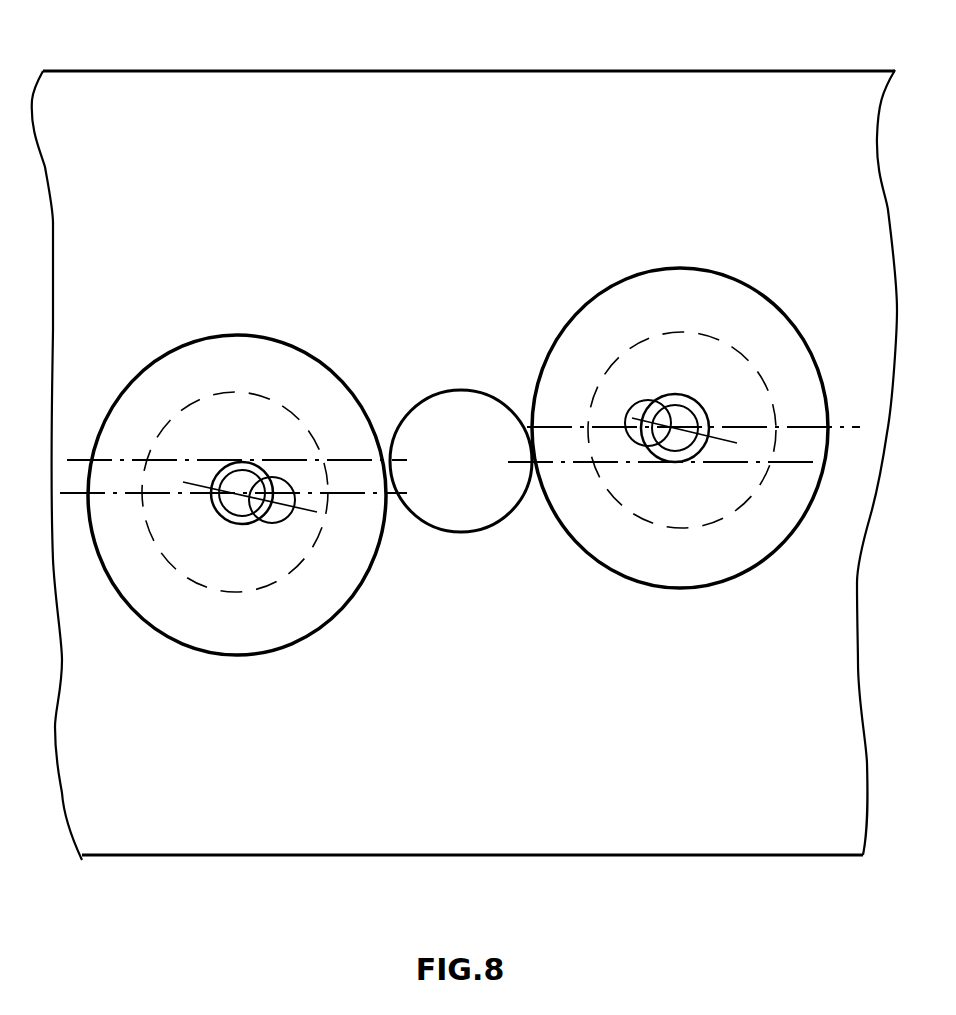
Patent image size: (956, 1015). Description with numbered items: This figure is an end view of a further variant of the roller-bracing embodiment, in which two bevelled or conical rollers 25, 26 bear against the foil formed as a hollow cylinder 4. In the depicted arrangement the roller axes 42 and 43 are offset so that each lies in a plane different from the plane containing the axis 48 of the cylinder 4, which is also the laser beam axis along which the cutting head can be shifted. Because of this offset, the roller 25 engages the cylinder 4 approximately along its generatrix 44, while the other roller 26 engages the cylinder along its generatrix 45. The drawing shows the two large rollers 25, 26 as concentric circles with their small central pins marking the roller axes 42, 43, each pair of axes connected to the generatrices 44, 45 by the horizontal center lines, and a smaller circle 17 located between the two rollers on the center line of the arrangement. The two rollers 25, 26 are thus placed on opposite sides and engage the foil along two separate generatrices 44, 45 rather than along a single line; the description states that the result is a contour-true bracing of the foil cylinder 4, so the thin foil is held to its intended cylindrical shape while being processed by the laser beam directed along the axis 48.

The foil / hollow cylinder 4 is at (687, 98).
The central opening 17 is at (473, 428).
The conical roller 25 is at (317, 382).
The conical roller 26 is at (745, 310).
The axis 42 is at (273, 521).
The axis 43 is at (727, 437).
The generatrix 44 is at (357, 493).
The generatrix 45 is at (842, 425).
The axis of the cylinder / laser beam axis 48 is at (797, 462).